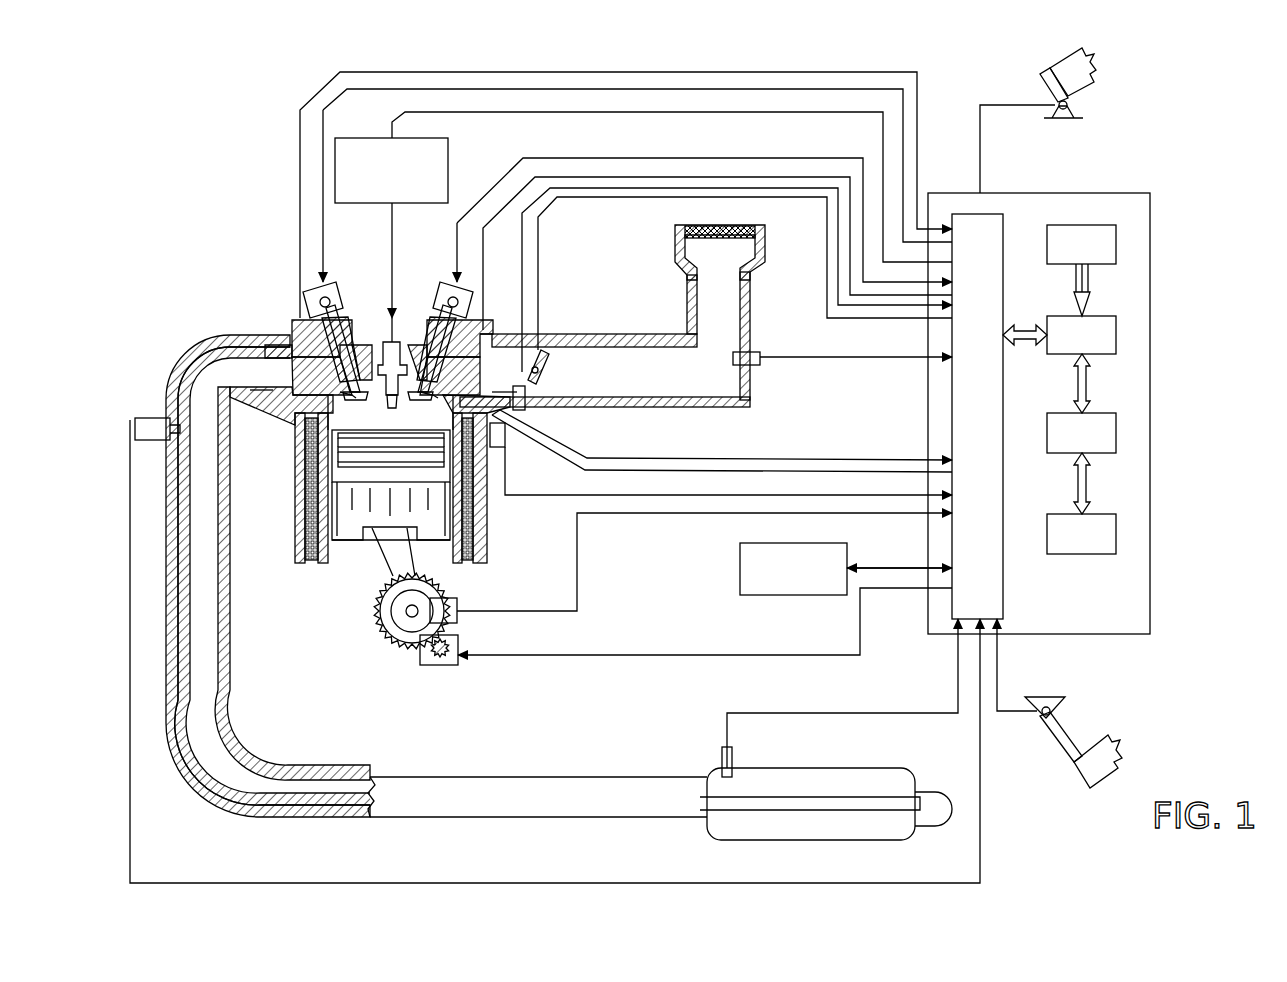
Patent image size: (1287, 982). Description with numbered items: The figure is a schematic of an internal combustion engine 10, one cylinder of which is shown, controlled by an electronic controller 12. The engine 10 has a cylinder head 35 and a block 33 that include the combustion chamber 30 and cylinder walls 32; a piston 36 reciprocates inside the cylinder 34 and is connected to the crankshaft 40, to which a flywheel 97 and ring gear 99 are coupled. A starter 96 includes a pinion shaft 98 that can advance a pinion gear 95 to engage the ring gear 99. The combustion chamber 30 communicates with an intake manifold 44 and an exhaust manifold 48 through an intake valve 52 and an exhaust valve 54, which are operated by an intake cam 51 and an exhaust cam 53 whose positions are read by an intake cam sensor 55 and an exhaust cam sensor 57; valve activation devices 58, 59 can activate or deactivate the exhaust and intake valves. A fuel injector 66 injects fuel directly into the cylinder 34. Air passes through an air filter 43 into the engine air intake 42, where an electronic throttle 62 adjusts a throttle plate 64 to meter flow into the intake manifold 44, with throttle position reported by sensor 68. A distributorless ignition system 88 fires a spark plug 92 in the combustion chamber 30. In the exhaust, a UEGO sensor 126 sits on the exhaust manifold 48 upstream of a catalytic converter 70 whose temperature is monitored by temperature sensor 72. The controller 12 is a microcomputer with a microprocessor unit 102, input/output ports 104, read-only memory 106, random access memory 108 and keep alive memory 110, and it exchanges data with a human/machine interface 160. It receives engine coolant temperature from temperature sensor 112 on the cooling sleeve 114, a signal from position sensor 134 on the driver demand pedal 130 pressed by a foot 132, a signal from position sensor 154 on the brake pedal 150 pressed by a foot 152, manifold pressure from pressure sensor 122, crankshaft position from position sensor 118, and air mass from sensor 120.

The internal combustion engine 10 is at (232, 274).
The electronic controller 12 is at (1150, 195).
The combustion chamber 30 is at (387, 418).
The cylinder walls 32 is at (325, 550).
The block 33 is at (293, 462).
The cylinder 34 is at (368, 548).
The cylinder head 35 is at (290, 321).
The piston 36 is at (385, 515).
The crankshaft 40 is at (408, 632).
The engine air intake 42 is at (665, 250).
The air filter 43 is at (732, 244).
The intake manifold 44 is at (605, 339).
The exhaust manifold 48 is at (436, 576).
The intake cam 51 is at (455, 285).
The intake valve 52 is at (418, 390).
The exhaust cam 53 is at (326, 285).
The exhaust valve 54 is at (340, 392).
The intake cam sensor 55 is at (466, 306).
The exhaust cam sensor 57 is at (312, 300).
The valve activation device 58 is at (337, 306).
The valve activation device 59 is at (447, 315).
The electronic throttle 62 is at (543, 368).
The throttle plate 64 is at (538, 378).
The fuel injector 66 is at (497, 420).
The throttle position sensor 68 is at (484, 338).
The catalytic converter 70 is at (745, 770).
The temperature sensor 72 is at (730, 752).
The distributorless ignition system 88 is at (348, 138).
The spark plug 92 is at (395, 340).
The pinion gear 95 is at (447, 665).
The starter 96 is at (458, 664).
The flywheel 97 is at (390, 606).
The pinion shaft 98 is at (435, 668).
The ring gear 99 is at (425, 650).
The microprocessor unit 102 is at (1116, 336).
The input/output ports 104 is at (1003, 216).
The read-only memory 106 is at (1116, 242).
The random access memory 108 is at (1116, 430).
The keep alive memory 110 is at (1116, 528).
The temperature sensor 112 is at (505, 448).
The cooling sleeve 114 is at (487, 520).
The position sensor 118 is at (457, 602).
The air mass sensor 120 is at (752, 352).
The pressure sensor 122 is at (525, 410).
The Universal Exhaust Gas Oxygen sensor 126 is at (135, 426).
The driver demand pedal 130 is at (1043, 80).
The foot 132 is at (1094, 64).
The position sensor 134 is at (1078, 108).
The brake pedal 150 is at (1068, 760).
The foot 152 is at (1106, 732).
The position sensor 154 is at (1040, 704).
The human/machine interface 160 is at (846, 569).